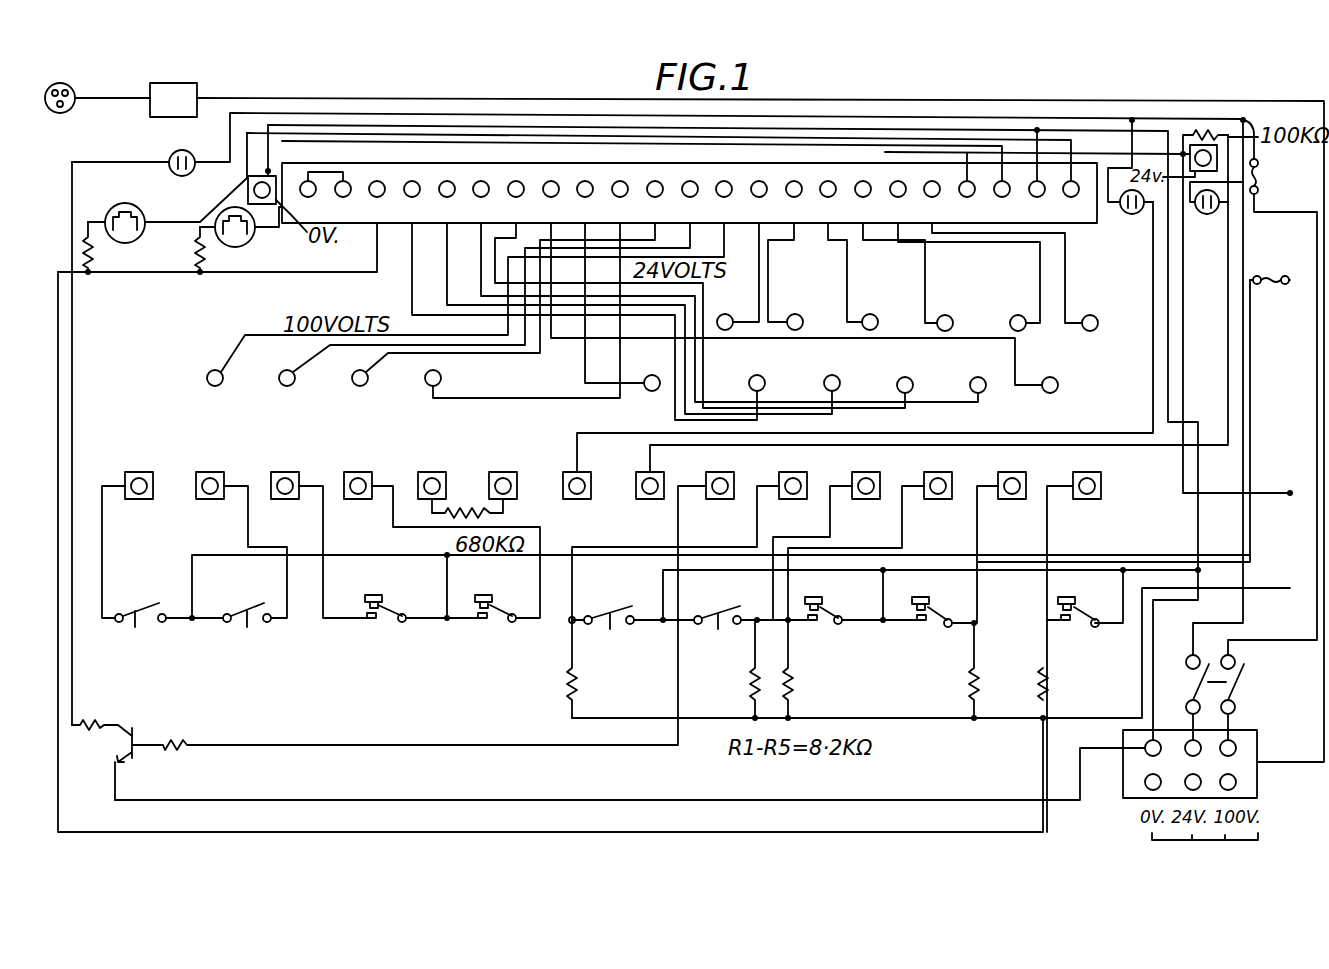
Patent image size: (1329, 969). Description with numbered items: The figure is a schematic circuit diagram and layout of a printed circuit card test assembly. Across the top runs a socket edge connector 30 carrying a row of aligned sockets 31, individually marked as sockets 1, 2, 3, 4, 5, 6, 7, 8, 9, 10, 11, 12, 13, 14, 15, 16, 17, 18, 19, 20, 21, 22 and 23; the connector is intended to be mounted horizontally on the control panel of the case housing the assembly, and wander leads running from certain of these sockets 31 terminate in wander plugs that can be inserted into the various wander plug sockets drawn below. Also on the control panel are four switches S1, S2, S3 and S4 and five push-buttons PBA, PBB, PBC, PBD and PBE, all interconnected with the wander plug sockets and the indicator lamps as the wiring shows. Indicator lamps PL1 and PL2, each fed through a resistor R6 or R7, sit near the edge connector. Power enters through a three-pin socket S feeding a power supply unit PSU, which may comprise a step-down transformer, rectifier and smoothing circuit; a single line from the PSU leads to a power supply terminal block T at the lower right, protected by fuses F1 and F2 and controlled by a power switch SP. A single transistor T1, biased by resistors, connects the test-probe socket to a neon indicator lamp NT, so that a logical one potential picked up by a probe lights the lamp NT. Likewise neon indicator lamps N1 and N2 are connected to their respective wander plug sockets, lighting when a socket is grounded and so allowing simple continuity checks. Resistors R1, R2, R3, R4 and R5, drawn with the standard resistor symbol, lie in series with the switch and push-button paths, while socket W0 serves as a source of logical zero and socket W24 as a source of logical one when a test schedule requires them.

The socket edge connector 30 is at (355, 168).
The aligned sockets 31 is at (423, 149).
The edge connector socket 1 is at (308, 201).
The edge connector socket 2 is at (343, 201).
The edge connector socket 3 is at (377, 201).
The edge connector socket 4 is at (412, 201).
The edge connector socket 5 is at (447, 201).
The edge connector socket 6 is at (481, 201).
The edge connector socket 7 is at (516, 201).
The edge connector socket 8 is at (551, 201).
The edge connector socket 9 is at (585, 201).
The edge connector socket 10 is at (621, 201).
The edge connector socket 11 is at (656, 201).
The edge connector socket 12 is at (691, 201).
The edge connector socket 13 is at (725, 201).
The edge connector socket 14 is at (760, 201).
The edge connector socket 15 is at (795, 201).
The edge connector socket 16 is at (829, 201).
The edge connector socket 17 is at (864, 201).
The edge connector socket 18 is at (899, 201).
The edge connector socket 19 is at (933, 201).
The edge connector socket 20 is at (968, 201).
The edge connector socket 21 is at (1003, 201).
The edge connector socket 22 is at (1038, 201).
The edge connector socket 23 is at (1072, 201).
The three-pin socket S is at (66, 112).
The power supply unit PSU is at (162, 104).
The neon indicator lamp NT is at (192, 153).
The wander plug socket W0 is at (248, 186).
The indicator lamp PL1 is at (138, 237).
The indicator lamp PL2 is at (250, 240).
The resistor R6 is at (94, 265).
The resistor R7 is at (206, 265).
The transistor T1 is at (134, 754).
The power supply terminal block T is at (1247, 765).
The power switch SP is at (1236, 702).
The fuse F1 is at (1258, 183).
The fuse F2 is at (1268, 276).
The neon indicator lamp N1 is at (1124, 212).
The neon indicator lamp N2 is at (1199, 212).
The wander plug socket W24 is at (1217, 165).
The resistor R1 is at (566, 682).
The resistor R2 is at (749, 682).
The resistor R3 is at (795, 682).
The resistor R4 is at (968, 684).
The resistor R5 is at (1050, 684).
The switch S1 is at (140, 629).
The switch S2 is at (247, 629).
The switch S3 is at (609, 630).
The switch S4 is at (717, 630).
The push-button PBA is at (382, 624).
The push-button PBB is at (821, 626).
The push-button PBC is at (926, 626).
The push-button PBD is at (493, 624).
The push-button PBE is at (1077, 626).